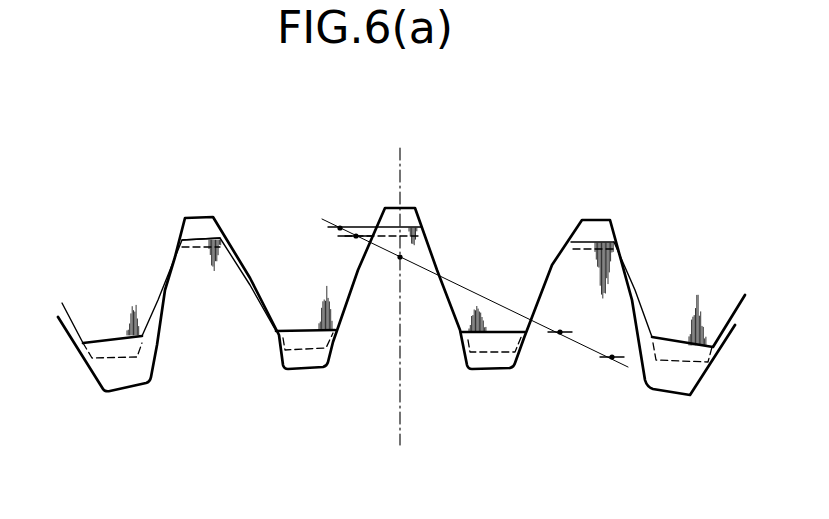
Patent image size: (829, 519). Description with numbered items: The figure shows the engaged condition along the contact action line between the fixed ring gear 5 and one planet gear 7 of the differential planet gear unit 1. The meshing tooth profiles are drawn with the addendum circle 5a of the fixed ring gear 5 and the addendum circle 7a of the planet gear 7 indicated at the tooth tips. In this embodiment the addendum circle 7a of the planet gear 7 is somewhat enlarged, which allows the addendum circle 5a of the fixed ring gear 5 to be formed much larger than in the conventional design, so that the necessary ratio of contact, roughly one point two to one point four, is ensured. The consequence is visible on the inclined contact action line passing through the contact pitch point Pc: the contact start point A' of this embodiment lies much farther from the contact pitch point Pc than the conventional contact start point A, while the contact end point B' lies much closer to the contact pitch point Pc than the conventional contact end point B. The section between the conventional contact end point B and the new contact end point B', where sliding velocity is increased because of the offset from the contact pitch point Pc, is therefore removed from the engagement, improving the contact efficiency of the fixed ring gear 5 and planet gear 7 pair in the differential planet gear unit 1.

The differential planet gear unit 1 is at (631, 179).
The fixed ring gear 5 is at (505, 251).
The addendum circle of the fixed ring gear 5a is at (307, 333).
The planet gear 7 is at (380, 350).
The addendum circle of the planet gear 7a is at (410, 227).
The conventional contact start point A is at (355, 212).
The contact start point A' is at (336, 208).
The contact pitch point Pc is at (400, 257).
The conventional contact end point B is at (612, 376).
The contact end point B' is at (560, 350).